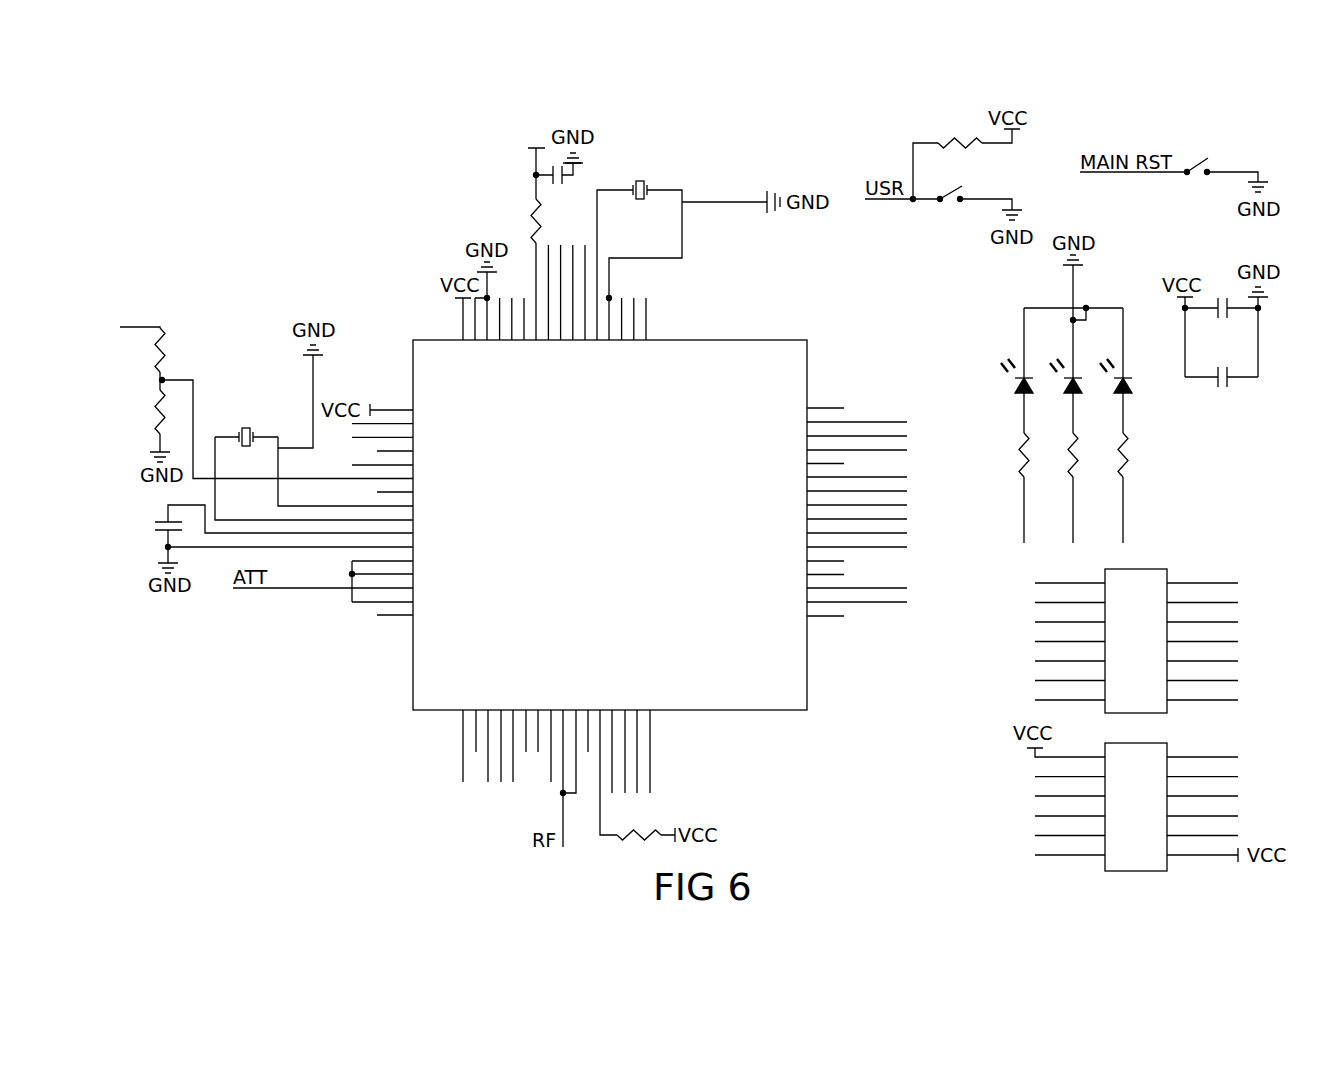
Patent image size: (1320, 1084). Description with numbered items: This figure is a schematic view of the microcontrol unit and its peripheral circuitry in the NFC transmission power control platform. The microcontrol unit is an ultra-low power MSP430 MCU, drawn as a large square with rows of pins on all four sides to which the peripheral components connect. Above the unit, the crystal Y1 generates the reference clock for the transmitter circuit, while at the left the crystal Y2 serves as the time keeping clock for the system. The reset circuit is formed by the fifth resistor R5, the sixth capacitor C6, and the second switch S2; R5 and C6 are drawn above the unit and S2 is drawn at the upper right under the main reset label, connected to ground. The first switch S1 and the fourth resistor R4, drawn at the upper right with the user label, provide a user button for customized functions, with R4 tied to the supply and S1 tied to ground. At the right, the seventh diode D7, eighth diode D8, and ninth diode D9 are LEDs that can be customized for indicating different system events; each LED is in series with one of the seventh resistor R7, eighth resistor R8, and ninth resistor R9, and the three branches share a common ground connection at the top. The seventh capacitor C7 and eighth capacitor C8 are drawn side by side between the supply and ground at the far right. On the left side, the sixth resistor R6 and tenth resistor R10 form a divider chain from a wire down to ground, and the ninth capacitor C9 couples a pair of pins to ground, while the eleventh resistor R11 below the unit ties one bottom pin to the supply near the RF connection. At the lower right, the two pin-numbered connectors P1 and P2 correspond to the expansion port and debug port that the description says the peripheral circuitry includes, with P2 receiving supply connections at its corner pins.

The fourth resistor R4 is at (979, 132).
The fifth resistor R5 is at (522, 257).
The sixth resistor R6 is at (160, 353).
The seventh resistor R7 is at (1038, 468).
The eighth resistor R8 is at (1087, 468).
The ninth resistor R9 is at (1137, 468).
The tenth resistor R10 is at (144, 421).
The eleventh resistor R11 is at (637, 776).
The sixth capacitor C6 is at (555, 178).
The seventh capacitor C7 is at (1221, 320).
The eighth capacitor C8 is at (1221, 390).
The ninth capacitor C9 is at (266, 539).
The reference clock crystal Y1 is at (688, 248).
The time keeping clock Y2 is at (314, 432).
The seventh diode D7 is at (1028, 362).
The eighth diode D8 is at (1077, 387).
The ninth diode D9 is at (1127, 362).
The first switch S1 is at (980, 209).
The second switch S2 is at (1227, 179).
The connector P1 is at (1136, 630).
The connector P2 is at (1132, 796).